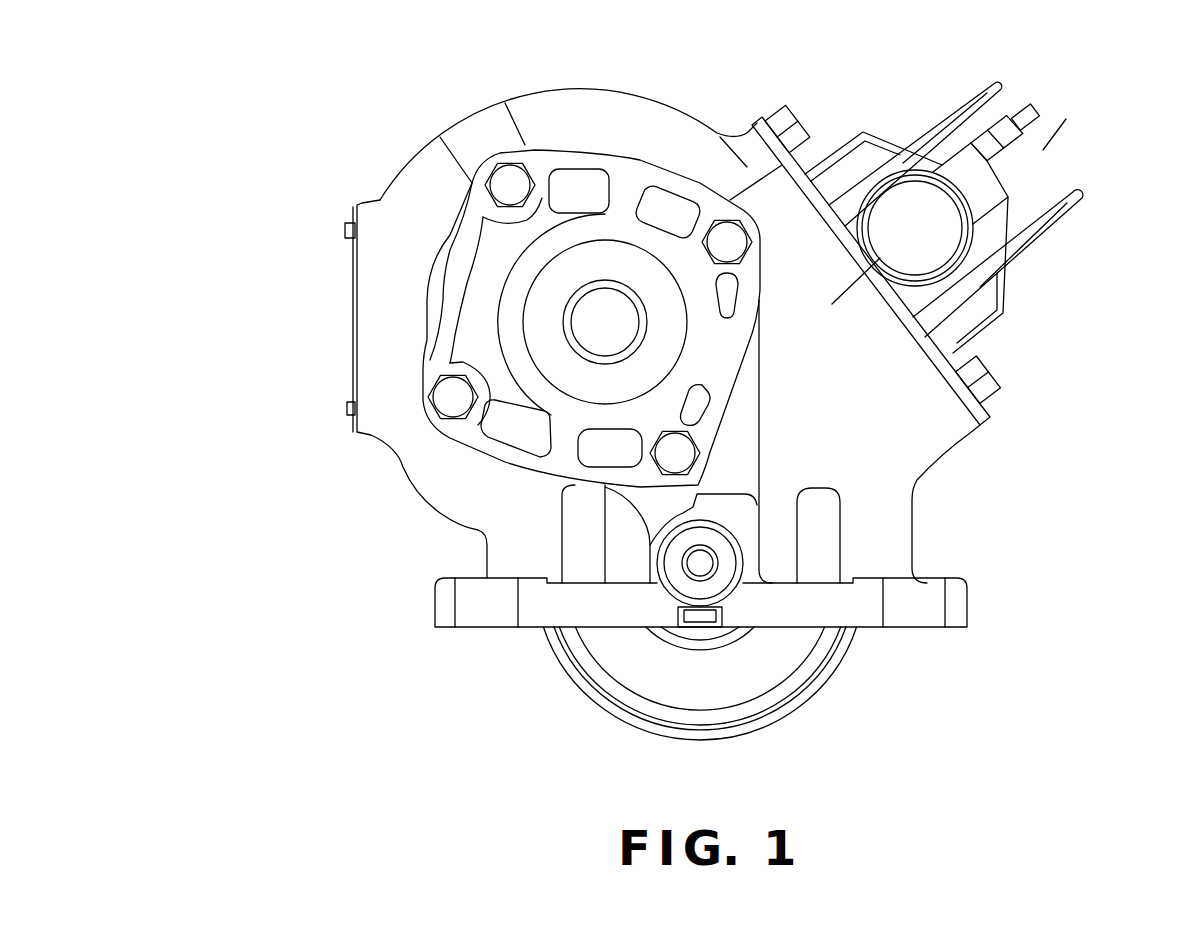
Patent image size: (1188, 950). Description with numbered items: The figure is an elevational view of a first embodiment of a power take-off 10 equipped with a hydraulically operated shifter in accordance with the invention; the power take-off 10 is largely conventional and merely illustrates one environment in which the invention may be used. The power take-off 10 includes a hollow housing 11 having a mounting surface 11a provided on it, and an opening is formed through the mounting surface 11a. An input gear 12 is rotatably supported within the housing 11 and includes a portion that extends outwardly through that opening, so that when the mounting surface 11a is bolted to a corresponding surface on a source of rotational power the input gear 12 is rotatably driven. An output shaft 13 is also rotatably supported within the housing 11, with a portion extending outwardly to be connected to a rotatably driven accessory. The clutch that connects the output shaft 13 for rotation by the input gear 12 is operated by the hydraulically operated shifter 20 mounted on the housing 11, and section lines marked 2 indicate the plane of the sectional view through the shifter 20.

The power take-off 10 is at (318, 316).
The housing 11 is at (952, 422).
The mounting surface 11a is at (922, 627).
The input gear 12 is at (775, 710).
The output shaft 13 is at (600, 340).
The hydraulically operated shifter 20 is at (1052, 313).
The section line 2- 2 is at (814, 264).